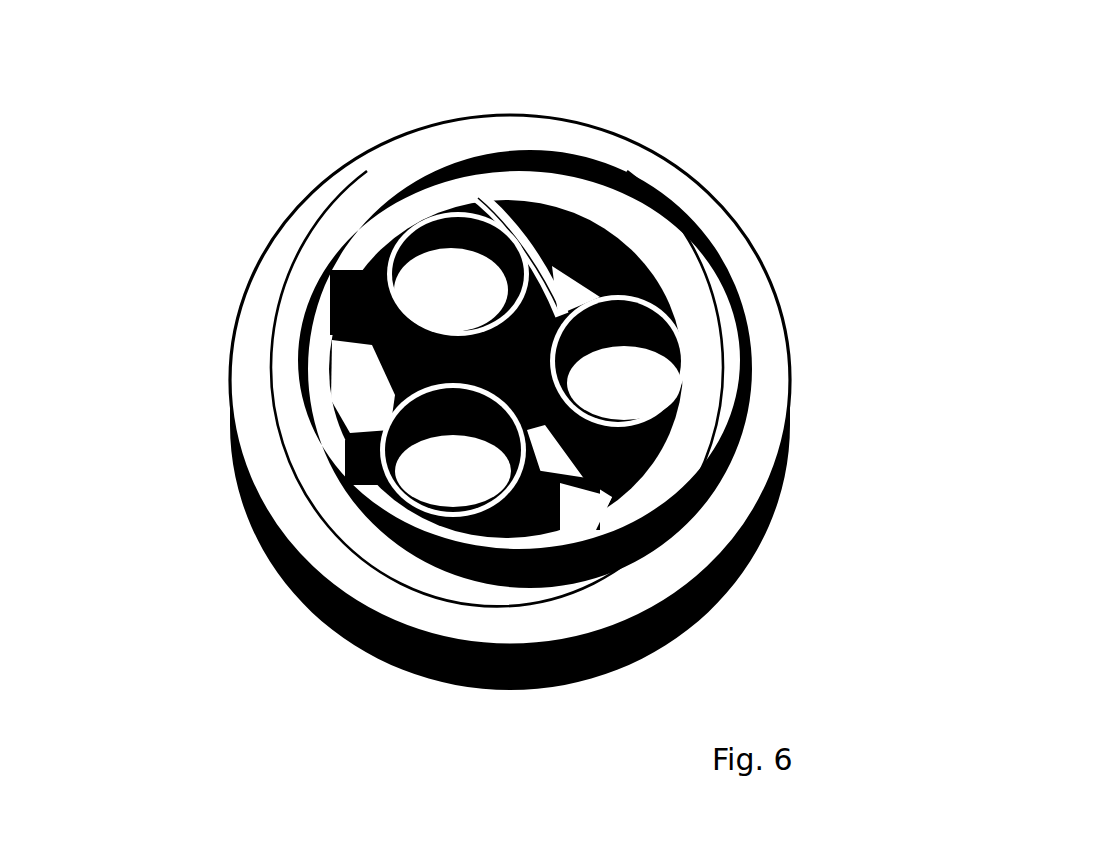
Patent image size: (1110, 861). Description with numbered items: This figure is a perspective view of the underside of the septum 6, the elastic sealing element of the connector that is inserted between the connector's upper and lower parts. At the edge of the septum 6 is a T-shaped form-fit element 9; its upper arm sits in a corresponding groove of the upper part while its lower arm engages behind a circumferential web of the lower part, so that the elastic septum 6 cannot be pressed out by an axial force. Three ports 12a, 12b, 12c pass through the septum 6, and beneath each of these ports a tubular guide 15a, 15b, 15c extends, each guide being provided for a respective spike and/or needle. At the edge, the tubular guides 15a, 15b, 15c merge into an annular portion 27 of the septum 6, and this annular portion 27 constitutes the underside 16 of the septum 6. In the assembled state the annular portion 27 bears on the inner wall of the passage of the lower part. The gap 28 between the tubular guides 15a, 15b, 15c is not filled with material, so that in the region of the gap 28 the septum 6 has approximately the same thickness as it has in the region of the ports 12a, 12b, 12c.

The septum 6 is at (226, 586).
The T-shaped form-fit element 9 is at (767, 380).
The port 12a is at (448, 276).
The port 12b is at (467, 468).
The port 12c is at (637, 368).
The tubular guide 15a is at (345, 290).
The tubular guide 15b is at (363, 455).
The tubular guide 15c is at (660, 410).
The underside 16 is at (635, 220).
The annular portion 27 is at (533, 180).
The gap 28 is at (610, 217).